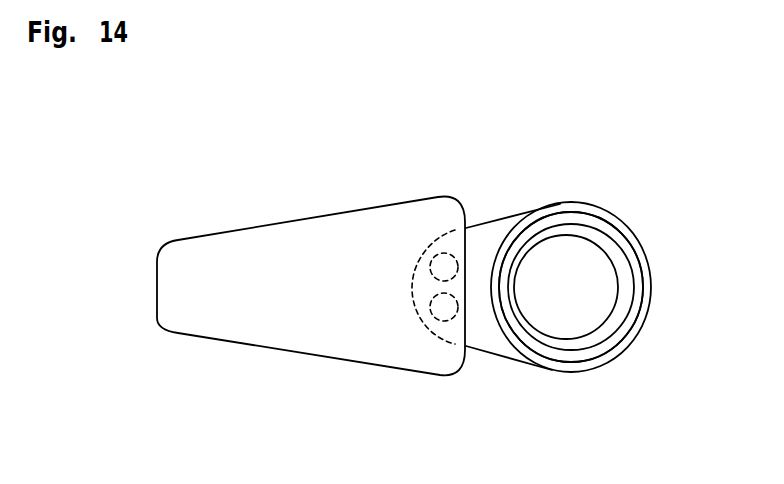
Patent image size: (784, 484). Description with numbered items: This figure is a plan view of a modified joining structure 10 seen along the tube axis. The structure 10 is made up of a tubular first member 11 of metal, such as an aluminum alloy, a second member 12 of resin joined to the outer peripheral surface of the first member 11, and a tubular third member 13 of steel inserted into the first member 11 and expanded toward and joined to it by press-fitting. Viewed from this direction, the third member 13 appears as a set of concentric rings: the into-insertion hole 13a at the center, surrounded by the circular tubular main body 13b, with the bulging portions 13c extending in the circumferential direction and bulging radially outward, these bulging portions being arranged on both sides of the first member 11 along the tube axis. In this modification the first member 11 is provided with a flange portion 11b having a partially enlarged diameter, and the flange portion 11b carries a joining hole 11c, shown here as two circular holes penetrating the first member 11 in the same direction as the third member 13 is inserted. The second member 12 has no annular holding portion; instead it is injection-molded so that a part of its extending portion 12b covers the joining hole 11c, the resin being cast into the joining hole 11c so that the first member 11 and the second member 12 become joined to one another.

The structure 10 is at (612, 188).
The first member 11 is at (489, 227).
The flange portion 11b is at (483, 343).
The joining hole 11c is at (441, 243).
The second member 12 is at (305, 256).
The extending portion 12b is at (242, 228).
The third member 13 is at (557, 230).
The into-insertion hole 13a is at (583, 275).
The main body 13b is at (624, 287).
The bulging portion 13c is at (630, 315).